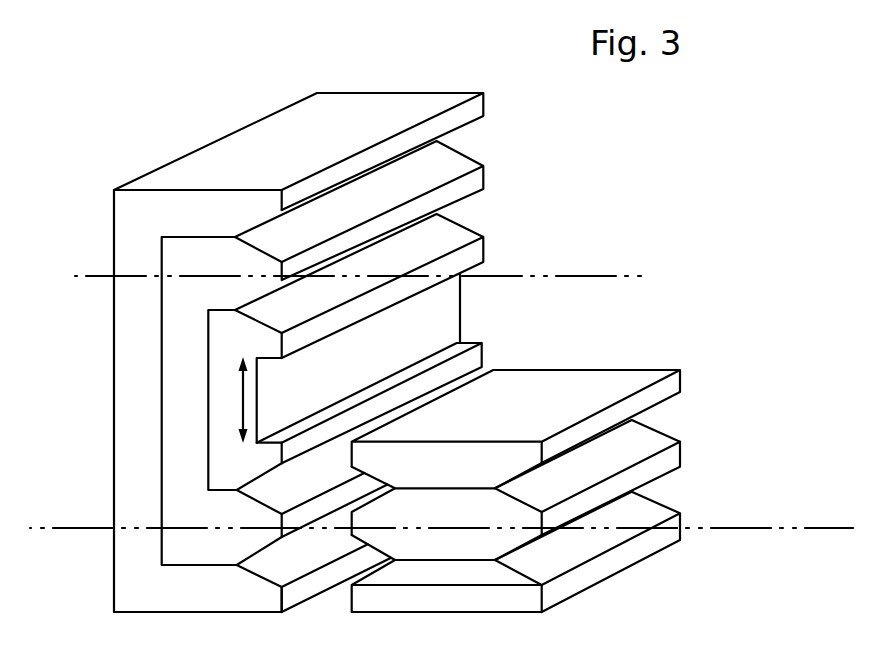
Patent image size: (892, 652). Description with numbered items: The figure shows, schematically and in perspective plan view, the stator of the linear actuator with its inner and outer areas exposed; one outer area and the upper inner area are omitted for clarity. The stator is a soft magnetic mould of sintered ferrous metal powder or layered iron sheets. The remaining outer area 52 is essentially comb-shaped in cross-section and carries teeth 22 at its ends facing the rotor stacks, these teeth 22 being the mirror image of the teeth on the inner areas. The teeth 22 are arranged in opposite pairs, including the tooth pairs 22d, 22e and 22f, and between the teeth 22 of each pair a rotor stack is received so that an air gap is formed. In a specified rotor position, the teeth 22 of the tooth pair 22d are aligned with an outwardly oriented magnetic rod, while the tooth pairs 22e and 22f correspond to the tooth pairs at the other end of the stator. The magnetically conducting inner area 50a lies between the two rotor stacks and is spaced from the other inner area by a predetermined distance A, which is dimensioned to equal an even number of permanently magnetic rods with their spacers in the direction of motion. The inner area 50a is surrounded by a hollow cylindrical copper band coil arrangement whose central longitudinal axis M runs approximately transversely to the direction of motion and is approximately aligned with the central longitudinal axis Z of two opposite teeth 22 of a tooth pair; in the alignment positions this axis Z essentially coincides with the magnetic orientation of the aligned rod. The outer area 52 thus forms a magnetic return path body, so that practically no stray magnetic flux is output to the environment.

The teeth 22 is at (319, 351).
The tooth pair 22d is at (268, 462).
The tooth pair 22e is at (281, 537).
The tooth pair 22f is at (281, 608).
The inner area 50a is at (447, 417).
The outer area 52 is at (222, 412).
The predetermined distance A is at (255, 400).
The central longitudinal axis Z is at (359, 260).
The central longitudinal axis M is at (444, 545).